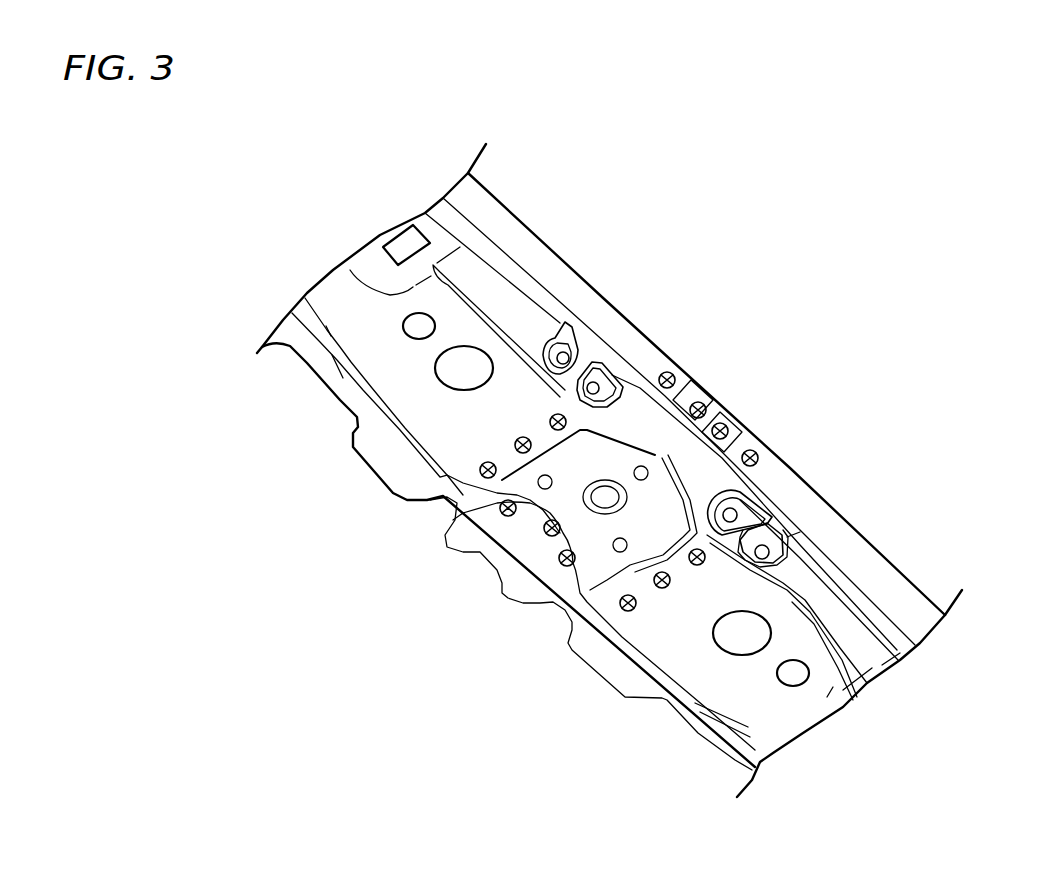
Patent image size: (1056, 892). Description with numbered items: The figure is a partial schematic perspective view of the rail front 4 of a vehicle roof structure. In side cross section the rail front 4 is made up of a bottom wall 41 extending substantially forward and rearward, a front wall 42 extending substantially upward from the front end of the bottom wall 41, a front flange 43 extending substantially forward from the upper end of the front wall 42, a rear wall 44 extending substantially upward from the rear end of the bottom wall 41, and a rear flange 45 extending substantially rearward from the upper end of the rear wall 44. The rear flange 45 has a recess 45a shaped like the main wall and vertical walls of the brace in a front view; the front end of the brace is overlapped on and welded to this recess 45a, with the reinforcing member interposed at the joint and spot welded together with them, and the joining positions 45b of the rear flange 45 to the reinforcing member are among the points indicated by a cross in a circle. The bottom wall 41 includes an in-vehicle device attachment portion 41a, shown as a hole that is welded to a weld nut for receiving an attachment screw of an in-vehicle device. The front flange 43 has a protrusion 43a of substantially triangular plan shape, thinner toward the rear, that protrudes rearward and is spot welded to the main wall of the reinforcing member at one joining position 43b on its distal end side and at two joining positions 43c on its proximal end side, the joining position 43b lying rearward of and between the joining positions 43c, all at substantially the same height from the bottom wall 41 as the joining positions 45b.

The rail front 4 is at (455, 290).
The bottom wall 41 is at (780, 627).
The in-vehicle device attachment portion 41a is at (545, 482).
The front wall 42 is at (657, 686).
The front flange 43 is at (595, 653).
The protrusion 43a is at (520, 527).
The joining position on the distal end side 43b is at (548, 535).
The joining positions on the proximal end side 43c is at (490, 540).
The rear wall 44 is at (800, 540).
The rear flange 45 is at (770, 473).
The recess 45a is at (722, 425).
The joining positions of the rear flange 45b is at (700, 408).